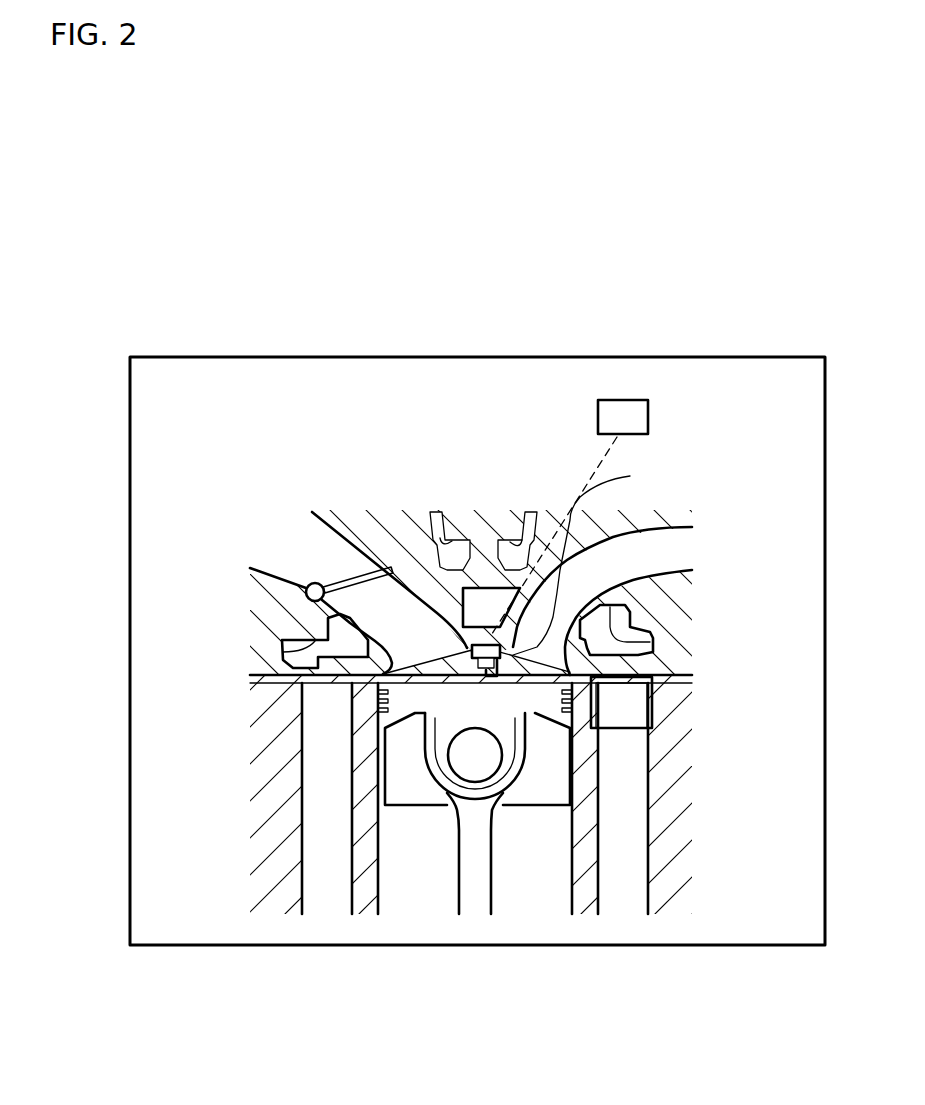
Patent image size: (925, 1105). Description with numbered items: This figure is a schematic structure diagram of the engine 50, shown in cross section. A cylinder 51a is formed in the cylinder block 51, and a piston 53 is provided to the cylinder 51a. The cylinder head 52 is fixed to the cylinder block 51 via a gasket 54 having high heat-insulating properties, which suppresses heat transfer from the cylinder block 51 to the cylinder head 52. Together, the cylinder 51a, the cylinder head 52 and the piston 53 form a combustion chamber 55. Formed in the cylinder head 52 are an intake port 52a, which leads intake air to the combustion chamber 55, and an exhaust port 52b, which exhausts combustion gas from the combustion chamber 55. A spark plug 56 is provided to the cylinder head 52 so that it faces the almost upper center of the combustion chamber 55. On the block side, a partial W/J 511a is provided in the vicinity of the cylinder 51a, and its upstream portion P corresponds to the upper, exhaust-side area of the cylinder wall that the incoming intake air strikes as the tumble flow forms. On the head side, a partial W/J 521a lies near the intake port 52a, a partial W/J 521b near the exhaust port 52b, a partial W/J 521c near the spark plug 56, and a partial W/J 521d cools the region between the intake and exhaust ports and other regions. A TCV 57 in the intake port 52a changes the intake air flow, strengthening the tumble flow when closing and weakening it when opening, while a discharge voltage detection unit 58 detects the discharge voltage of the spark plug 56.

The engine 50 is at (128, 407).
The cylinder block 51 is at (668, 873).
The cylinder 51a is at (370, 833).
The partial W/J 511a is at (643, 762).
The cylinder head 52 is at (668, 598).
The intake port 52a is at (360, 527).
The exhaust port 52b is at (660, 527).
The partial W/J 521a is at (310, 653).
The partial W/J 521b is at (660, 638).
The partial W/J 521c is at (463, 615).
The partial W/J 521d is at (525, 543).
The piston 53 is at (397, 765).
The gasket 54 is at (282, 684).
The combustion chamber 55 is at (586, 559).
The spark plug 56 is at (467, 652).
The TCV 57 is at (313, 590).
The discharge voltage detection unit 58 is at (650, 415).
The upstream portion P is at (652, 700).